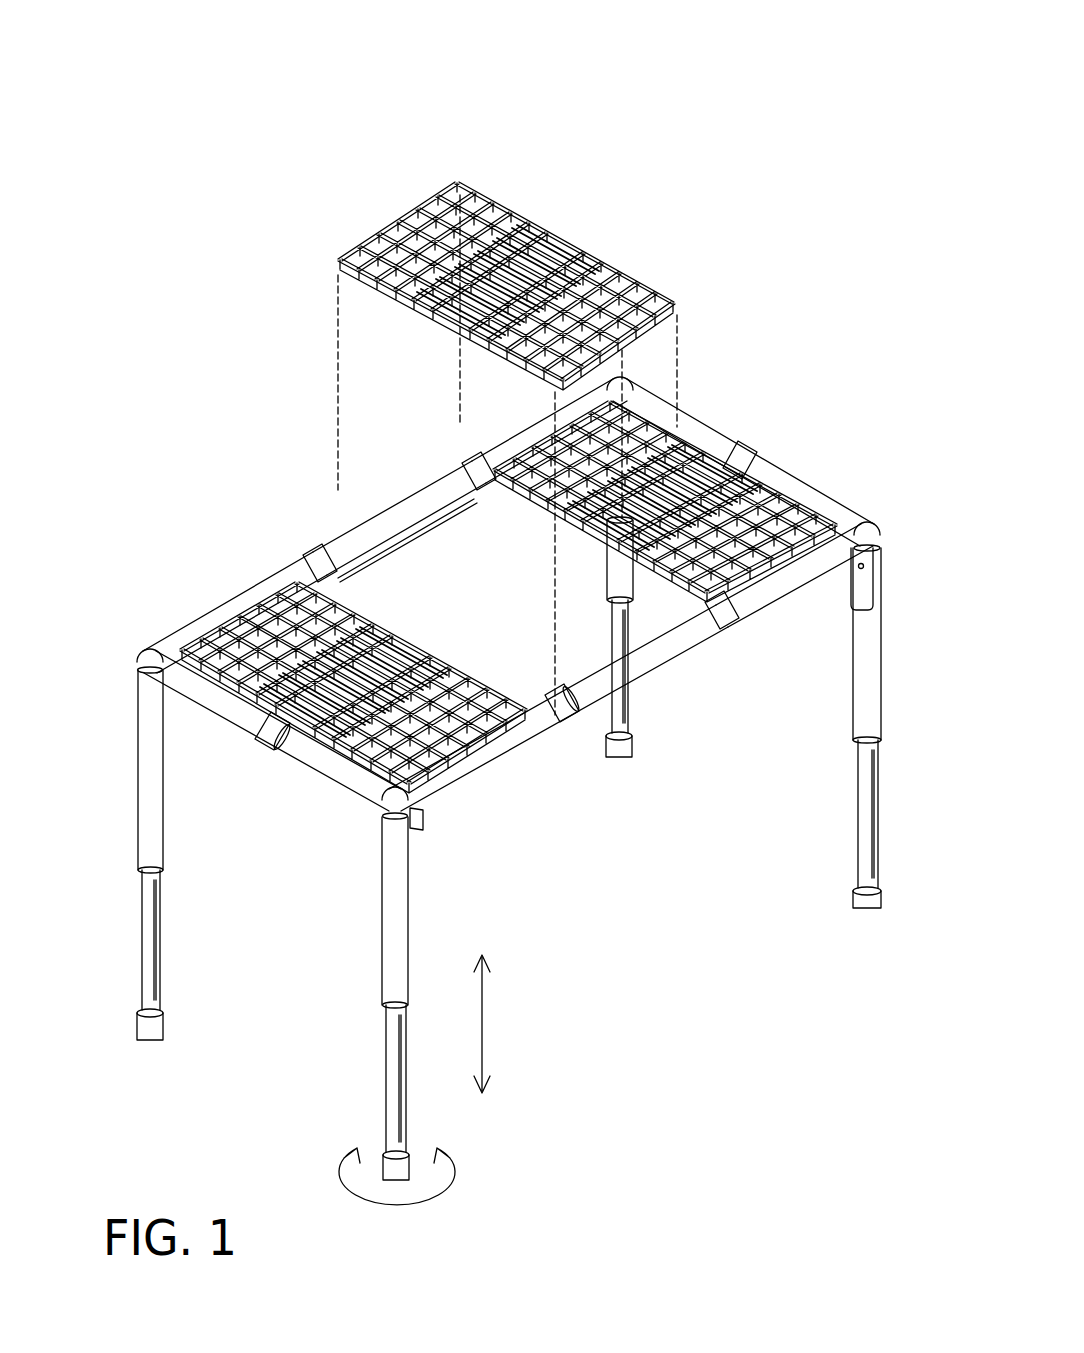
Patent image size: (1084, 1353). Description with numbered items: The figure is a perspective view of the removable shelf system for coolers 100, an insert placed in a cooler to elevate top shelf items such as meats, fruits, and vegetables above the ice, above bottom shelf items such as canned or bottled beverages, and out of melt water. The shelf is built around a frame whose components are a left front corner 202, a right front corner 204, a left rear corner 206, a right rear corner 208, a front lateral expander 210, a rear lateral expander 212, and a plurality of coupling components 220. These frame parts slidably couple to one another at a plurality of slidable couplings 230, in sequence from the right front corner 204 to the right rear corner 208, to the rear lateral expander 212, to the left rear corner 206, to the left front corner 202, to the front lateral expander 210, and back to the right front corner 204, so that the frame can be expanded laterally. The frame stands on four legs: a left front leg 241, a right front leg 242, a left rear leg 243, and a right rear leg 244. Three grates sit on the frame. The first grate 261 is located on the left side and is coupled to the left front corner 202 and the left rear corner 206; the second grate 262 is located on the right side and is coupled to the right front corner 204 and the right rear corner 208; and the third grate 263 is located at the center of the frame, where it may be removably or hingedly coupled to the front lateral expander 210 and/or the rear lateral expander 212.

The removable shelf system for coolers 100 is at (684, 145).
The left front corner 202 is at (367, 792).
The right front corner 204 is at (866, 522).
The left rear corner 206 is at (247, 660).
The right rear corner 208 is at (668, 388).
The front lateral expander 210 is at (650, 653).
The rear lateral expander 212 is at (398, 497).
The coupling components 220 is at (262, 732).
The slidable couplings 230 is at (755, 432).
The left front leg 241 is at (388, 977).
The right front leg 242 is at (870, 660).
The left rear leg 243 is at (142, 828).
The right rear leg 244 is at (610, 570).
The first grate 261 is at (265, 684).
The second grate 262 is at (775, 515).
The third grate 263 is at (483, 222).